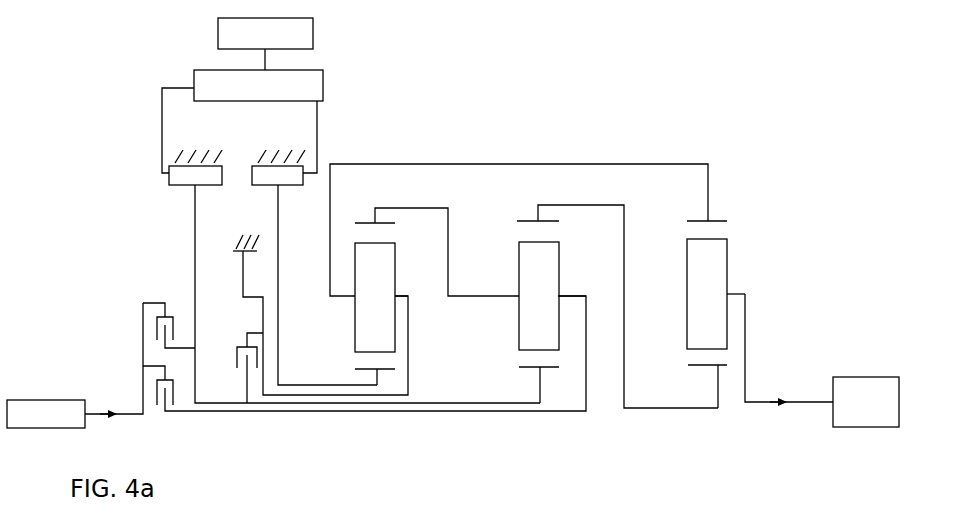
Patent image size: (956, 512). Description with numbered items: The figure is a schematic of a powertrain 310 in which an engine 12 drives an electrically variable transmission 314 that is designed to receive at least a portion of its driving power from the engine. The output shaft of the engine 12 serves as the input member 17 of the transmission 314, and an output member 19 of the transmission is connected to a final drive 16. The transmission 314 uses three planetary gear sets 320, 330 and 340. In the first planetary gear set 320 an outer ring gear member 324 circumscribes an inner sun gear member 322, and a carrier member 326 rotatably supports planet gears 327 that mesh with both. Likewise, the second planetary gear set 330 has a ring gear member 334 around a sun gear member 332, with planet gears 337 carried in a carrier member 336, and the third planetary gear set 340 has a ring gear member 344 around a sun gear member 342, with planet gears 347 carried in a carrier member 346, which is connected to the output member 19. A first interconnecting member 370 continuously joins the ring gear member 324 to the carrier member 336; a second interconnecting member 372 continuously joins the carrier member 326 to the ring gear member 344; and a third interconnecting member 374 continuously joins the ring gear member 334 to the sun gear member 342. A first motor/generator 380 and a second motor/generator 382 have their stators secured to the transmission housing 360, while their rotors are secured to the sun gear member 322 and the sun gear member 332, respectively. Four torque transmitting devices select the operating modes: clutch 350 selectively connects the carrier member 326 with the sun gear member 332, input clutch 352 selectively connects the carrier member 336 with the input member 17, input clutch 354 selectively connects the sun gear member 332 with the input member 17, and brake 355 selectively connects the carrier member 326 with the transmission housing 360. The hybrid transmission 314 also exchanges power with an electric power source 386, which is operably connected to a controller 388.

The engine 12 is at (42, 400).
The final drive 16 is at (860, 377).
The input member 17 is at (92, 412).
The output member 19 is at (766, 403).
The powertrain 310 is at (66, 184).
The electrically variable transmission 314 is at (66, 236).
The first planetary gear set 320 is at (372, 372).
The sun gear member 322 is at (379, 387).
The ring gear member 324 is at (357, 222).
The carrier member 326 is at (398, 288).
The planet gears 327 is at (375, 297).
The second planetary gear set 330 is at (533, 370).
The sun gear member 332 is at (541, 386).
The ring gear member 334 is at (520, 221).
The carrier member 336 is at (562, 290).
The planet gears 337 is at (539, 296).
The third planetary gear set 340 is at (703, 368).
The sun gear member 342 is at (718, 377).
The ring gear member 344 is at (692, 221).
The carrier member 346 is at (732, 286).
The planet gears 347 is at (707, 294).
The clutch 350 is at (247, 368).
The input clutch 352 is at (159, 413).
The input clutch 354 is at (158, 342).
The brake 355 is at (259, 252).
The transmission housing 360 is at (176, 158).
The first interconnecting member 370 is at (423, 208).
The second interconnecting member 372 is at (437, 163).
The third interconnecting member 374 is at (565, 205).
The first motor/generator 380 is at (306, 187).
The second motor/generator 382 is at (176, 190).
The electric power source 386 is at (313, 31).
The controller 388 is at (323, 80).